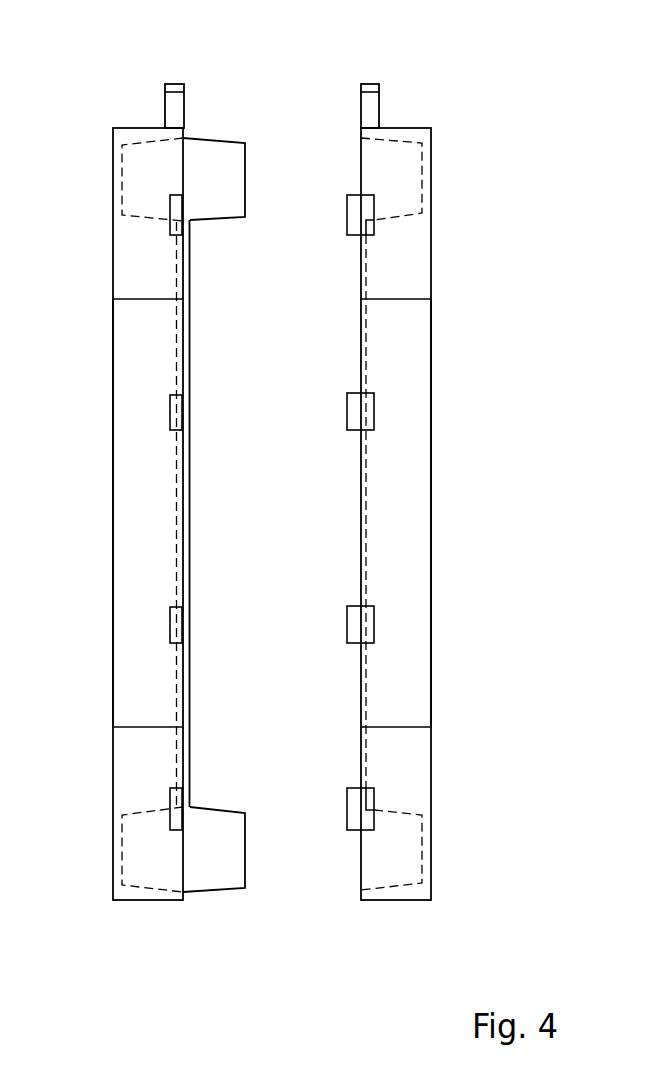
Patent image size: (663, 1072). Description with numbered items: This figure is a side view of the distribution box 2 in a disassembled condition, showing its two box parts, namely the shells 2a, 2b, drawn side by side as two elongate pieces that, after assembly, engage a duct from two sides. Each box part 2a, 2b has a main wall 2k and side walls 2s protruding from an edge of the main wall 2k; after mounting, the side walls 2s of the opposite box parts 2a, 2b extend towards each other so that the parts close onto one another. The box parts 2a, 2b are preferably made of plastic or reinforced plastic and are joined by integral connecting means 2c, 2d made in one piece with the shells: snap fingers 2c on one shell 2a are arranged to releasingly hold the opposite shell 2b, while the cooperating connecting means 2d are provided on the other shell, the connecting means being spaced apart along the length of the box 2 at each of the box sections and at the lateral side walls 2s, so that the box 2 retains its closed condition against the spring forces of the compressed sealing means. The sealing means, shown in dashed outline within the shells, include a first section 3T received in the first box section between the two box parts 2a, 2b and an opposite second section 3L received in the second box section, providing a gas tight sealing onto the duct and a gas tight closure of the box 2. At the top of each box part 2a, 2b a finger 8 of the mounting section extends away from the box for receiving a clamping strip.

The distribution box 2 is at (456, 72).
The box part 2a is at (400, 342).
The box part 2b is at (143, 256).
The snap finger 2c is at (347, 625).
The connecting means 2d is at (170, 625).
The main wall 2k is at (104, 468).
The side wall 2s is at (143, 538).
The second section of sealing means 3L is at (228, 182).
The first section of sealing means 3T is at (228, 853).
The finger 8 is at (155, 71).